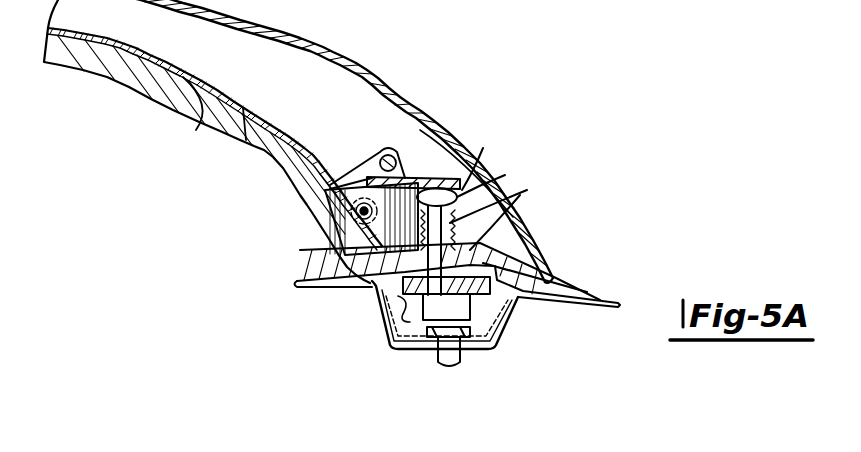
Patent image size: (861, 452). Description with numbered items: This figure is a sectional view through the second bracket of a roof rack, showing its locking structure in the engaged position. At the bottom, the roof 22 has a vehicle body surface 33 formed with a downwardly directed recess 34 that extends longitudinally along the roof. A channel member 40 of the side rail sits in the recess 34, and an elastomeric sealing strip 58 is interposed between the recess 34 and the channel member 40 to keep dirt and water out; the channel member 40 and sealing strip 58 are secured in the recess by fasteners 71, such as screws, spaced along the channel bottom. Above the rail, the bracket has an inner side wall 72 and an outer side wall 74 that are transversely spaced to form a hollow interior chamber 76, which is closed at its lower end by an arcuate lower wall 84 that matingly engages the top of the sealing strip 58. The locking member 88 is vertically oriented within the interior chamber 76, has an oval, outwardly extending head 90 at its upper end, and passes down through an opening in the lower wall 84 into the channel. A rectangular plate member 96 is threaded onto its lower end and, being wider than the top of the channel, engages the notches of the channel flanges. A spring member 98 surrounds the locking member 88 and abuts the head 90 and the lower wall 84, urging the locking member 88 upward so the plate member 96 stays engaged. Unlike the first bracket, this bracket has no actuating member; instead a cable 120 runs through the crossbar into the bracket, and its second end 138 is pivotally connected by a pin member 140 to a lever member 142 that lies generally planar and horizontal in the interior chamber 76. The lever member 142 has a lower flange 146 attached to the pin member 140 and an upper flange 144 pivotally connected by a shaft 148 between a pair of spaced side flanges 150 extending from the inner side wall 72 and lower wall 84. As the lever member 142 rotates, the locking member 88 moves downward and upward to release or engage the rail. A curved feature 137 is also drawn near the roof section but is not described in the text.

The roof 22 is at (608, 307).
The vehicle body surface 33 is at (588, 296).
The recess 34 is at (417, 313).
The channel member 40 is at (423, 353).
The sealing strip 58 is at (520, 339).
The fastener 71 is at (453, 360).
The inner side wall 72 is at (250, 150).
The outer side wall 74 is at (398, 174).
The interior chamber 76 is at (327, 70).
The lower wall 84 is at (505, 220).
The locking member 88 is at (490, 176).
The head 90 is at (483, 150).
The plate member 96 is at (406, 312).
The spring member 98 is at (492, 197).
The cable 120 is at (247, 105).
The cut boundary 137 is at (196, 118).
The second end 138 is at (333, 167).
The pin member 140 is at (360, 212).
The lever member 142 is at (437, 130).
The upper flange 144 is at (424, 188).
The lower flange 146 is at (347, 243).
The shaft 148 is at (386, 155).
The side flanges 150 is at (356, 205).